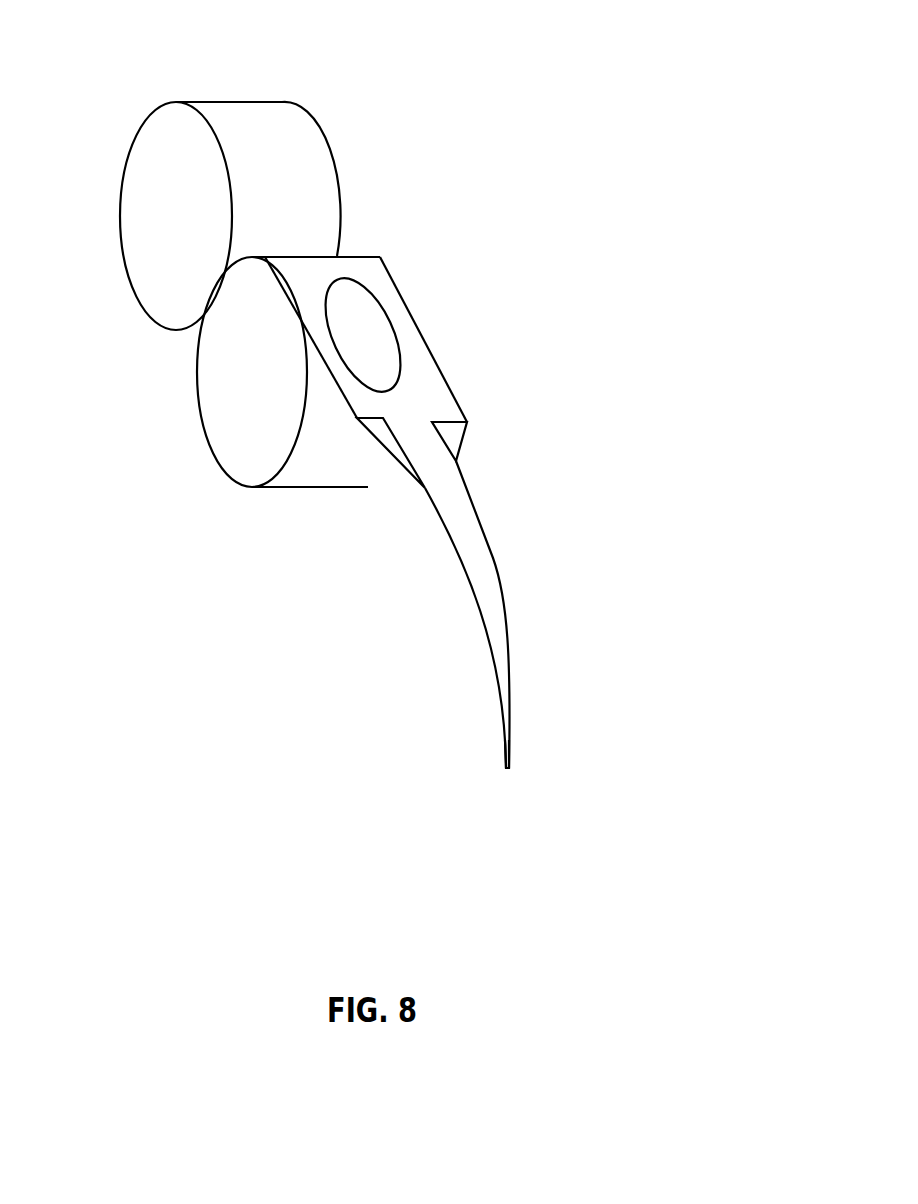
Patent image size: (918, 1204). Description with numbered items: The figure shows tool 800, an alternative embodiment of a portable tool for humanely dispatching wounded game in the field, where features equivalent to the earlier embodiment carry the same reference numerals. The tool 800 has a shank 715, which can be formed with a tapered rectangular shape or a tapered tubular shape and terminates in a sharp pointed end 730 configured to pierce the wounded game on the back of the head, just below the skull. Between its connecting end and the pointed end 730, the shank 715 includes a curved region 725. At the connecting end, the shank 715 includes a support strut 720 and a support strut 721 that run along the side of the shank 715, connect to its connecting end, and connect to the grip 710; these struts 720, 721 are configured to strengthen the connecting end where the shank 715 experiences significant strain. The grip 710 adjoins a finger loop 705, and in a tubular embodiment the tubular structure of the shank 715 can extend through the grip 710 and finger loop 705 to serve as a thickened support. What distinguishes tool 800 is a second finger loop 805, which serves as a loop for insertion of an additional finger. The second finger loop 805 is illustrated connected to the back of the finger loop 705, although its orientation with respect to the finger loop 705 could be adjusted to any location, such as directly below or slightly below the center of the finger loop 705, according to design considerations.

The tool 800 is at (452, 126).
The second finger loop 805 is at (126, 191).
The finger loop 705 is at (226, 399).
The grip 710 is at (412, 327).
The support strut 720 is at (468, 421).
The support strut 721 is at (380, 440).
The shank 715 is at (509, 528).
The curved region 725 is at (507, 612).
The pointed end 730 is at (532, 744).